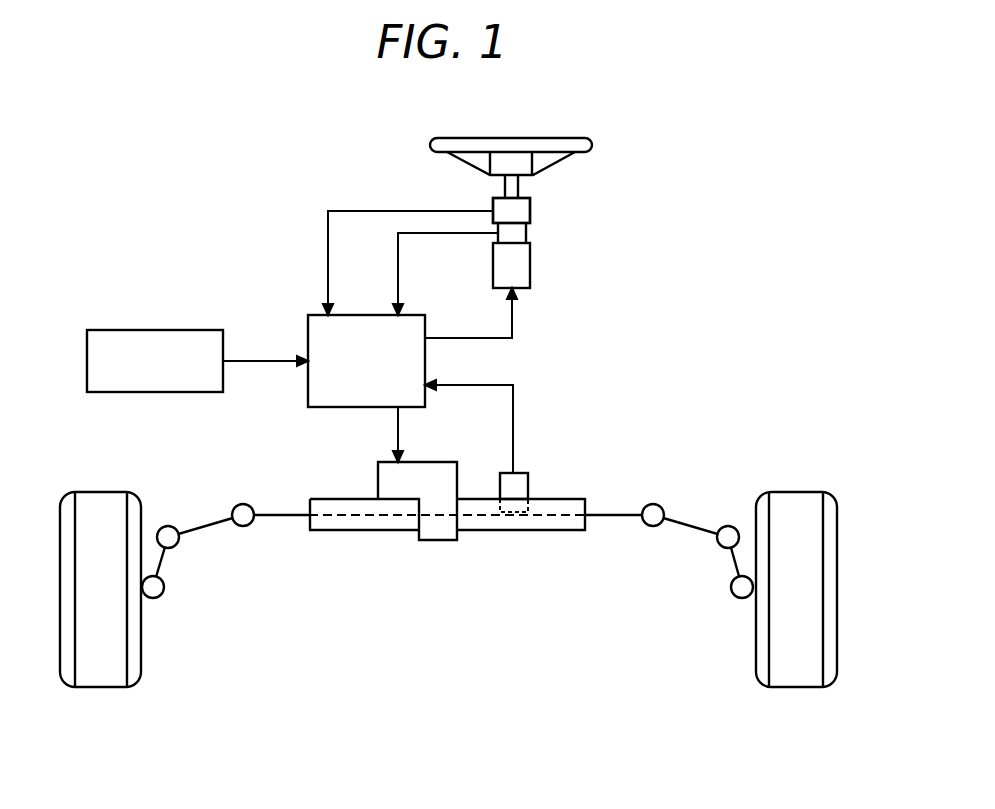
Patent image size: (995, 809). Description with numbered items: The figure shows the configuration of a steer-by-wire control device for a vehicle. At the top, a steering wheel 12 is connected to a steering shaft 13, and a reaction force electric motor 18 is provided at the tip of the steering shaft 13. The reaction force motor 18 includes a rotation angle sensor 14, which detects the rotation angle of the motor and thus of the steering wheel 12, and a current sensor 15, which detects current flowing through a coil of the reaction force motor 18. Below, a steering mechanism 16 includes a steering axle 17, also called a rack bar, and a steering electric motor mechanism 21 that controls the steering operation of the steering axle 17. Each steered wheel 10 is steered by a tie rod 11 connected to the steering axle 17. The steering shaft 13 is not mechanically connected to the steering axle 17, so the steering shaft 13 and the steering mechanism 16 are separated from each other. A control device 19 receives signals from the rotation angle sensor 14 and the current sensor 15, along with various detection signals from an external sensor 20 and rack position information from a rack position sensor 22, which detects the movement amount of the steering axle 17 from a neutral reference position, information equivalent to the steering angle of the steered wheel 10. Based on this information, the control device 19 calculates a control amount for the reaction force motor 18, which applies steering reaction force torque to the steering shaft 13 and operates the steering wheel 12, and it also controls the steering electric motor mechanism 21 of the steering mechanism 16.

The steered wheel 10 is at (97, 507).
The tie rod 11 is at (208, 530).
The steering wheel 12 is at (593, 145).
The steering shaft 13 is at (505, 187).
The rotation angle sensor 14 is at (530, 210).
The current sensor 15 is at (511, 210).
The steering mechanism 16 is at (381, 541).
The steering axle 17 is at (280, 512).
The reaction force electric motor 18 is at (530, 268).
The control device 19 is at (307, 325).
The external sensor 20 is at (122, 330).
The steering electric motor mechanism 21 is at (433, 467).
The rack position sensor 22 is at (528, 475).